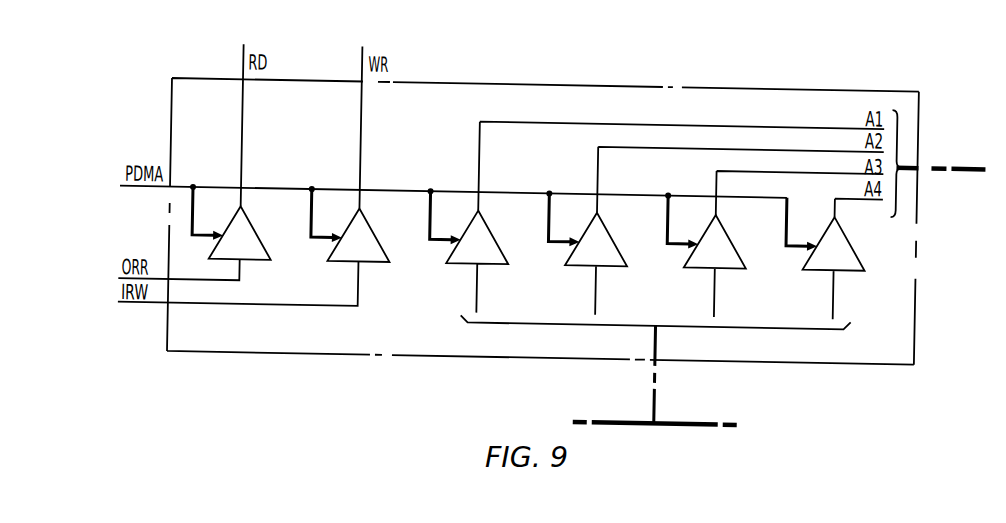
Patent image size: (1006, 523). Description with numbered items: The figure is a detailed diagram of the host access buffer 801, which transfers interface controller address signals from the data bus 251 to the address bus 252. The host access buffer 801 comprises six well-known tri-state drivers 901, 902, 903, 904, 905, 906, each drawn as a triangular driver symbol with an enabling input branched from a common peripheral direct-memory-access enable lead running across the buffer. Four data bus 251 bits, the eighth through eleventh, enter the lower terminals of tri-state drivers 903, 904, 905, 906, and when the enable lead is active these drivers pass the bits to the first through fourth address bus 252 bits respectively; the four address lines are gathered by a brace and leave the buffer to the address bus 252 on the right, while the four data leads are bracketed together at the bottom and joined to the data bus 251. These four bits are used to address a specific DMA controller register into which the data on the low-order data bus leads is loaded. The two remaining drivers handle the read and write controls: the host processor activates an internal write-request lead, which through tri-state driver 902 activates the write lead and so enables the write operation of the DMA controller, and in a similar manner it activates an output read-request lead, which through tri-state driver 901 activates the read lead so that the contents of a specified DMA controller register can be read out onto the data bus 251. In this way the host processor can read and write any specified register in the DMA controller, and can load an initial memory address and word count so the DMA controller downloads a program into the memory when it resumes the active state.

The host access buffer 801 is at (625, 78).
The tri-state driver 901 is at (252, 221).
The tri-state driver 902 is at (371, 221).
The tri-state driver 903 is at (490, 221).
The tri-state driver 904 is at (608, 221).
The tri-state driver 905 is at (727, 221).
The tri-state driver 906 is at (846, 221).
The data bus 251 is at (690, 409).
The address bus 252 is at (965, 151).